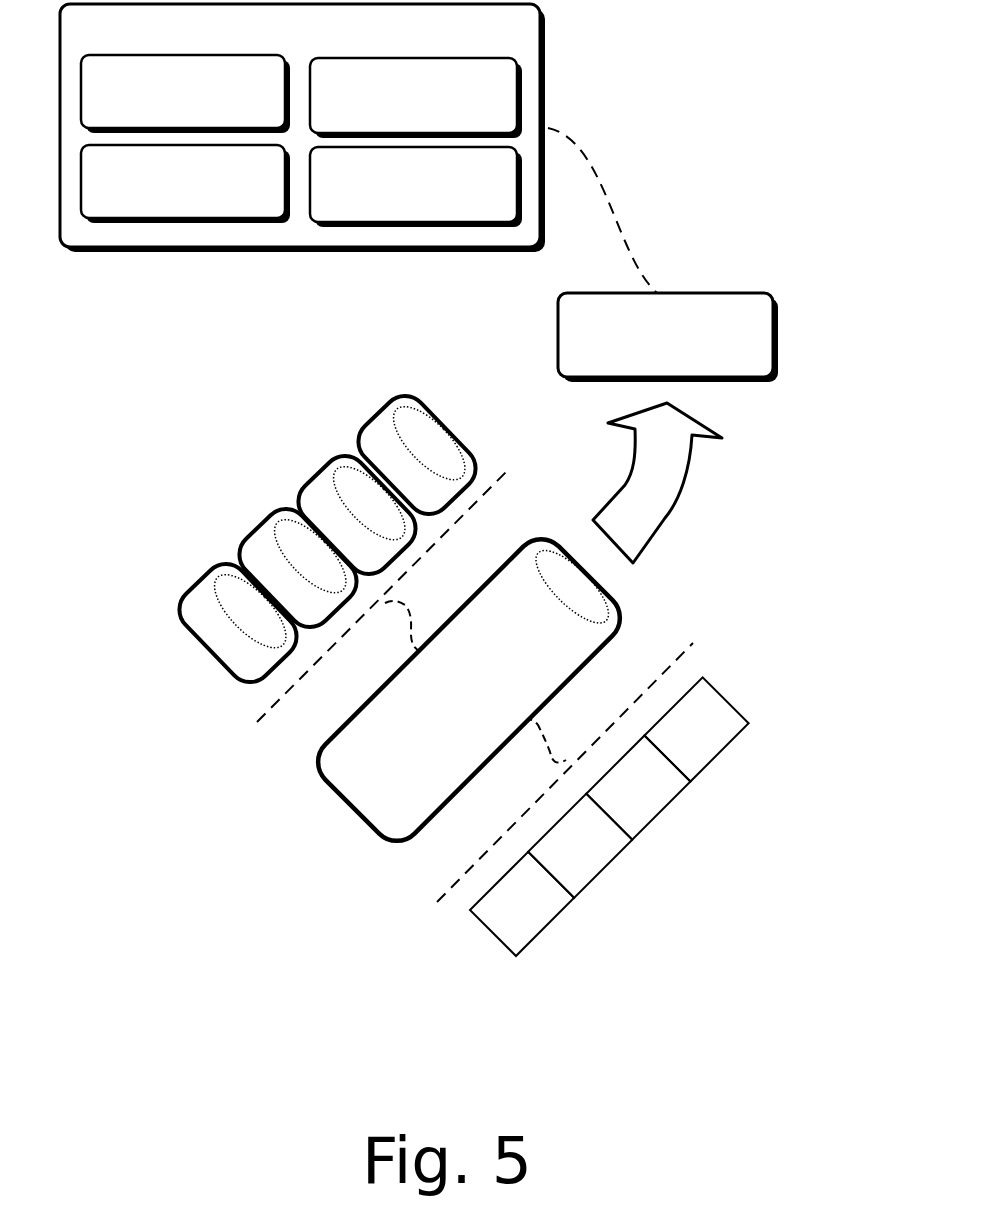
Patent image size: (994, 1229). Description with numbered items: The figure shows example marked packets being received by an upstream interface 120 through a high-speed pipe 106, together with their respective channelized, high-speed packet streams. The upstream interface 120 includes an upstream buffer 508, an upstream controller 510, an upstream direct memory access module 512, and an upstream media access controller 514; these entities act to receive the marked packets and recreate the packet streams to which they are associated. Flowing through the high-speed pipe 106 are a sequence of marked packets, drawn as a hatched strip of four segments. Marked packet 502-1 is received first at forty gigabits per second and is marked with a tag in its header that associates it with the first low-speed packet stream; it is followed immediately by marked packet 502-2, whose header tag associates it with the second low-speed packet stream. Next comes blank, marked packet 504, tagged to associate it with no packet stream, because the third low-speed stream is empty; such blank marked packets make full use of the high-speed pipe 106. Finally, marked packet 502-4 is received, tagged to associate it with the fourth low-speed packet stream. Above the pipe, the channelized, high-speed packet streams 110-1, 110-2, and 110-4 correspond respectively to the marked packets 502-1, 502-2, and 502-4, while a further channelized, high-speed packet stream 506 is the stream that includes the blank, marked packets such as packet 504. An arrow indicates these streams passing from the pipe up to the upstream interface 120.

The upstream interface 120 is at (530, 42).
The upstream buffer 508 is at (268, 122).
The upstream controller 510 is at (268, 211).
The upstream direct memory access module 512 is at (502, 124).
The upstream media access controller 514 is at (502, 212).
The high-speed pipe 106 is at (307, 853).
The channelized, high-speed packet stream 110-1 is at (378, 418).
The channelized, high-speed packet stream 110-2 is at (320, 472).
The channelized, high-speed packet stream 506 is at (255, 527).
The channelized, high-speed packet stream 110-4 is at (197, 582).
The marked packet 502-1 is at (720, 757).
The marked packet 502-2 is at (663, 813).
The blank, marked packet 504 is at (605, 872).
The marked packet 502-4 is at (547, 928).